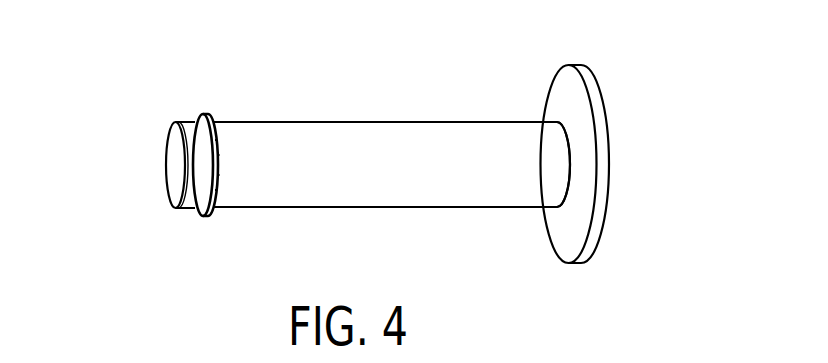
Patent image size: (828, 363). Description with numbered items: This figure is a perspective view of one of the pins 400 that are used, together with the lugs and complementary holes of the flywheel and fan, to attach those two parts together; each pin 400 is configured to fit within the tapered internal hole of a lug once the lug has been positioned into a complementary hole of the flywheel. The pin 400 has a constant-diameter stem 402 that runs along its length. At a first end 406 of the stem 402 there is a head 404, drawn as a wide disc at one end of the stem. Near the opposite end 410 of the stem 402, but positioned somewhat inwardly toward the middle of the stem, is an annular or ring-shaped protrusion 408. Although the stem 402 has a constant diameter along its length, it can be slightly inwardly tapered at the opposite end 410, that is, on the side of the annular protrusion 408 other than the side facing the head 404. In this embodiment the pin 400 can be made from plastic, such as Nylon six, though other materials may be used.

The pin 400 is at (240, 243).
The stem 402 is at (383, 121).
The head 404 is at (604, 81).
The first end 406 is at (568, 168).
The annular protrusion 408 is at (214, 108).
The opposite end 410 is at (175, 148).